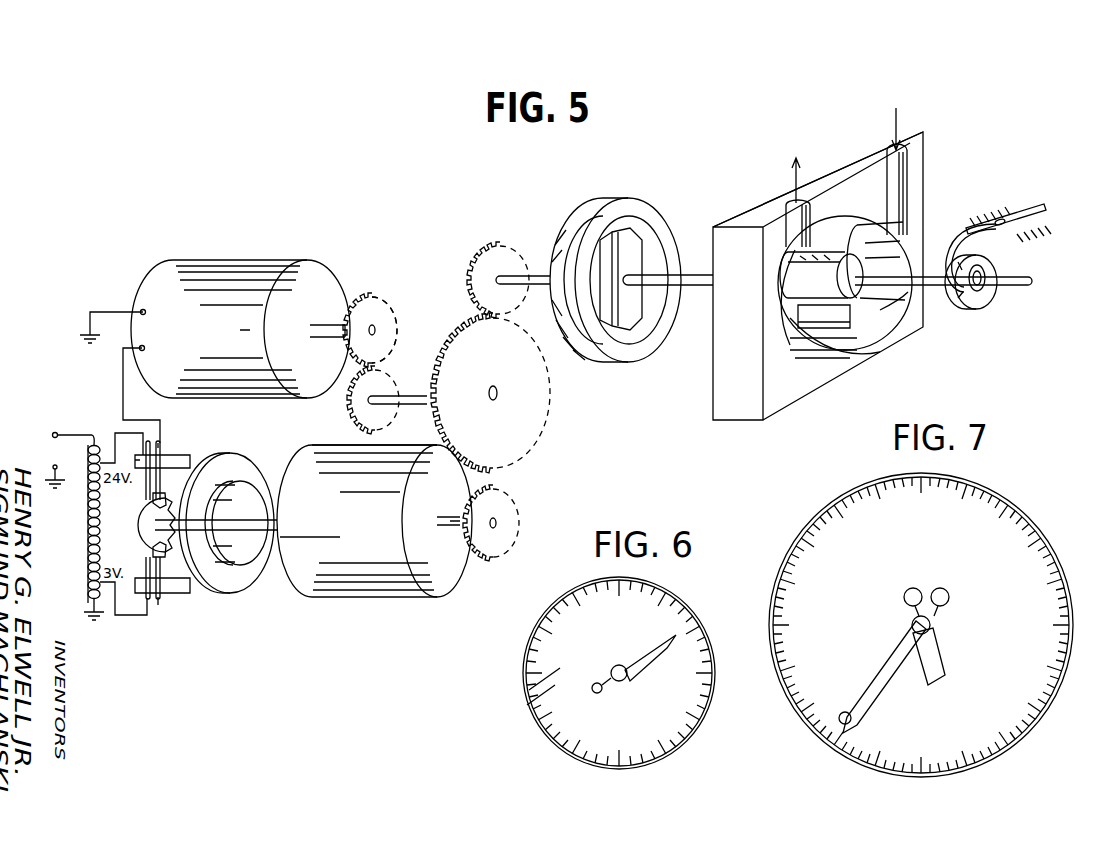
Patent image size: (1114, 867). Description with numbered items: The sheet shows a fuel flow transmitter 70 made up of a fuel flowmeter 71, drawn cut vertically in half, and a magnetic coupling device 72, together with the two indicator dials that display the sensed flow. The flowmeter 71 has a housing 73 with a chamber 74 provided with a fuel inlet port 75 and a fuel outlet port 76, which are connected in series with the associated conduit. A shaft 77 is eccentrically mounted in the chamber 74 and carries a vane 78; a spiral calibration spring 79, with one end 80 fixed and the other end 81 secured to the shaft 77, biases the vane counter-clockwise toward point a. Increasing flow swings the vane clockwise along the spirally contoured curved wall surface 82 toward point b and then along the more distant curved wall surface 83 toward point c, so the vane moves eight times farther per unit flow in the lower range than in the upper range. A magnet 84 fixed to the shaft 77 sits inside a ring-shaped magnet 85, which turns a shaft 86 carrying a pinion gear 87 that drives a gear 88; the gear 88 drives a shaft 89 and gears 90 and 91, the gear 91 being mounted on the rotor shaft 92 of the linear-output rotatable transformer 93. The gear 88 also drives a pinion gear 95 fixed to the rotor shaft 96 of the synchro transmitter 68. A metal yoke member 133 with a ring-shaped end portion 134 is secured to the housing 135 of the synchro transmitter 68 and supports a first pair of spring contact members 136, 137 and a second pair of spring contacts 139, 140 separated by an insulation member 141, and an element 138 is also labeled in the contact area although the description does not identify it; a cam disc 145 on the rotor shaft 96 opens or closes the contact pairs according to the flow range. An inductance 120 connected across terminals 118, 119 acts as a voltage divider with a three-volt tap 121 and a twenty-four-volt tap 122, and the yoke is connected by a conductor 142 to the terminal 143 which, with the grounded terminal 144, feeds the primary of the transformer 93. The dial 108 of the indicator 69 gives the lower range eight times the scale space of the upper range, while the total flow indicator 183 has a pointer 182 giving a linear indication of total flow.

In FIG. 5, the fuel flow transmitter 70 is at (697, 150).
In FIG. 5, the fuel flowmeter 71 is at (960, 153).
In FIG. 5, the magnetic coupling device 72 is at (656, 362).
In FIG. 5, the housing 73 is at (838, 168).
In FIG. 5, the chamber 74 is at (907, 234).
In FIG. 5, the fuel inlet port 75 is at (889, 150).
In FIG. 5, the fuel outlet port 76 is at (787, 205).
In FIG. 5, the shaft 77 is at (690, 275).
In FIG. 5, the vane 78 is at (868, 344).
In FIG. 5, the spiral calibration spring 79 is at (993, 297).
In FIG. 5, the fixed end of calibration spring 80 is at (997, 222).
In FIG. 5, the shaft end of calibration spring 81 is at (986, 268).
In FIG. 5, the curved wall surface 82 is at (915, 310).
In FIG. 5, the curved wall surface 83 is at (786, 345).
In FIG. 5, the magnet 84 is at (634, 305).
In FIG. 5, the ring-shaped magnet 85 is at (600, 348).
In FIG. 5, the shaft 86 is at (536, 275).
In FIG. 5, the pinion gear 87 is at (509, 250).
In FIG. 5, the gear 88 is at (548, 424).
In FIG. 5, the shaft 89 is at (395, 395).
In FIG. 5, the gear 90 is at (383, 415).
In FIG. 5, the gear 91 is at (395, 318).
In FIG. 5, the rotor shaft 92 is at (335, 318).
In FIG. 5, the linear-output rotatable transformer 93 is at (175, 241).
In FIG. 5, the pinion gear 95 is at (511, 537).
In FIG. 5, the rotor shaft 96 is at (456, 552).
In FIG. 5, the synchro transmitter 68 is at (331, 613).
In FIG. 5, the housing 135 is at (317, 455).
In FIG. 5, the ring-shaped end portion 134 is at (250, 585).
In FIG. 5, the yoke member 133 is at (200, 585).
In FIG. 5, the cam disc 145 is at (138, 522).
In FIG. 5, the spring contact member 137 is at (160, 493).
In FIG. 5, the brush 138 is at (165, 460).
In FIG. 5, the spring contact member 136 is at (146, 492).
In FIG. 5, the spring contact 139 is at (152, 565).
In FIG. 5, the insulation member 141 is at (165, 594).
In FIG. 5, the spring contact 140 is at (166, 582).
In FIG. 5, the terminal 118 is at (57, 432).
In FIG. 5, the terminal 119 is at (68, 472).
In FIG. 5, the inductance 120 is at (88, 513).
In FIG. 5, the tap 121 is at (100, 585).
In FIG. 5, the tap 122 is at (108, 440).
In FIG. 5, the conductor 142 is at (123, 375).
In FIG. 5, the terminal 143 is at (147, 350).
In FIG. 5, the grounded terminal 144 is at (148, 311).
In FIG. 6, the indicator 69 is at (513, 643).
In FIG. 6, the dial 108 is at (527, 700).
In FIG. 7, the pointer 182 is at (940, 645).
In FIG. 7, the total flow indicator 183 is at (801, 507).